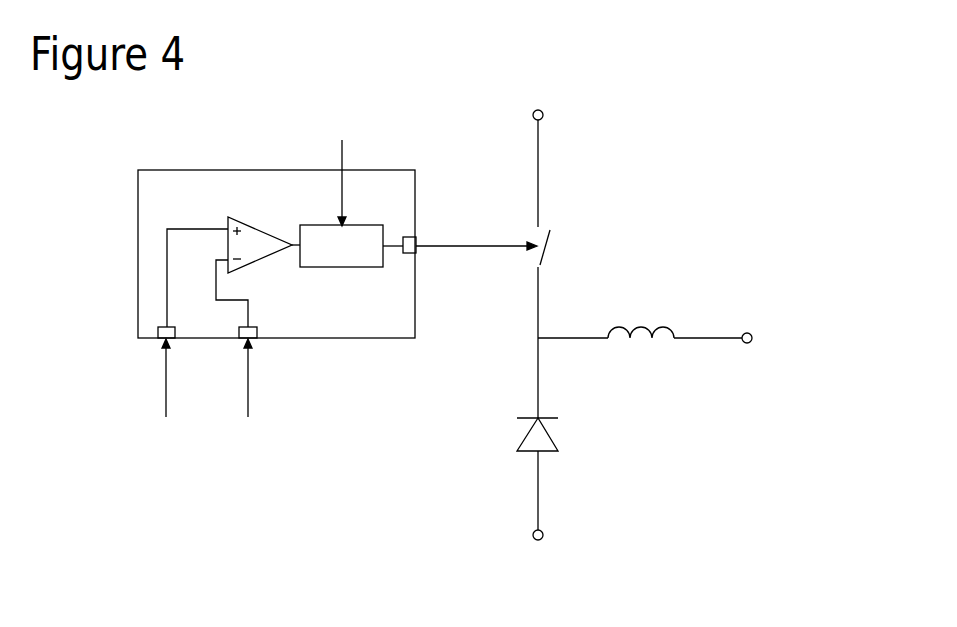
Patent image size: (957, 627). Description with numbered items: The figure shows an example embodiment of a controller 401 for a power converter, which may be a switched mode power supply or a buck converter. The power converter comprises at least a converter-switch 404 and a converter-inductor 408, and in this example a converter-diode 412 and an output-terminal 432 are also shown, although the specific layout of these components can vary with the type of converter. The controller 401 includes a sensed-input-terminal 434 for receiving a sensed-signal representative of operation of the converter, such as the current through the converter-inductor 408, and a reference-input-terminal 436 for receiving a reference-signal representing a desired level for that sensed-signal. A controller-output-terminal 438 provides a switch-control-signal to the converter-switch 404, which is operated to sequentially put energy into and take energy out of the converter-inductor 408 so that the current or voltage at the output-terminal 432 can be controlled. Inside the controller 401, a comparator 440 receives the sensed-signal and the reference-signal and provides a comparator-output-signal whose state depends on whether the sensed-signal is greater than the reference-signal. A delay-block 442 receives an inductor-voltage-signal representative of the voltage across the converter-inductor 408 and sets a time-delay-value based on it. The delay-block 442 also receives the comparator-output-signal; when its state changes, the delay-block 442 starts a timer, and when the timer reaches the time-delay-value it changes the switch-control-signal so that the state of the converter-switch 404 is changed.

The controller 401 is at (138, 233).
The comparator 440 is at (258, 230).
The delay-block 442 is at (341, 267).
The controller-output-terminal 438 is at (413, 237).
The sensed-input-terminal 434 is at (158, 333).
The reference-input-terminal 436 is at (258, 337).
The converter-switch 404 is at (547, 243).
The converter-inductor 408 is at (645, 327).
The output-terminal 432 is at (747, 333).
The converter-diode 412 is at (548, 433).